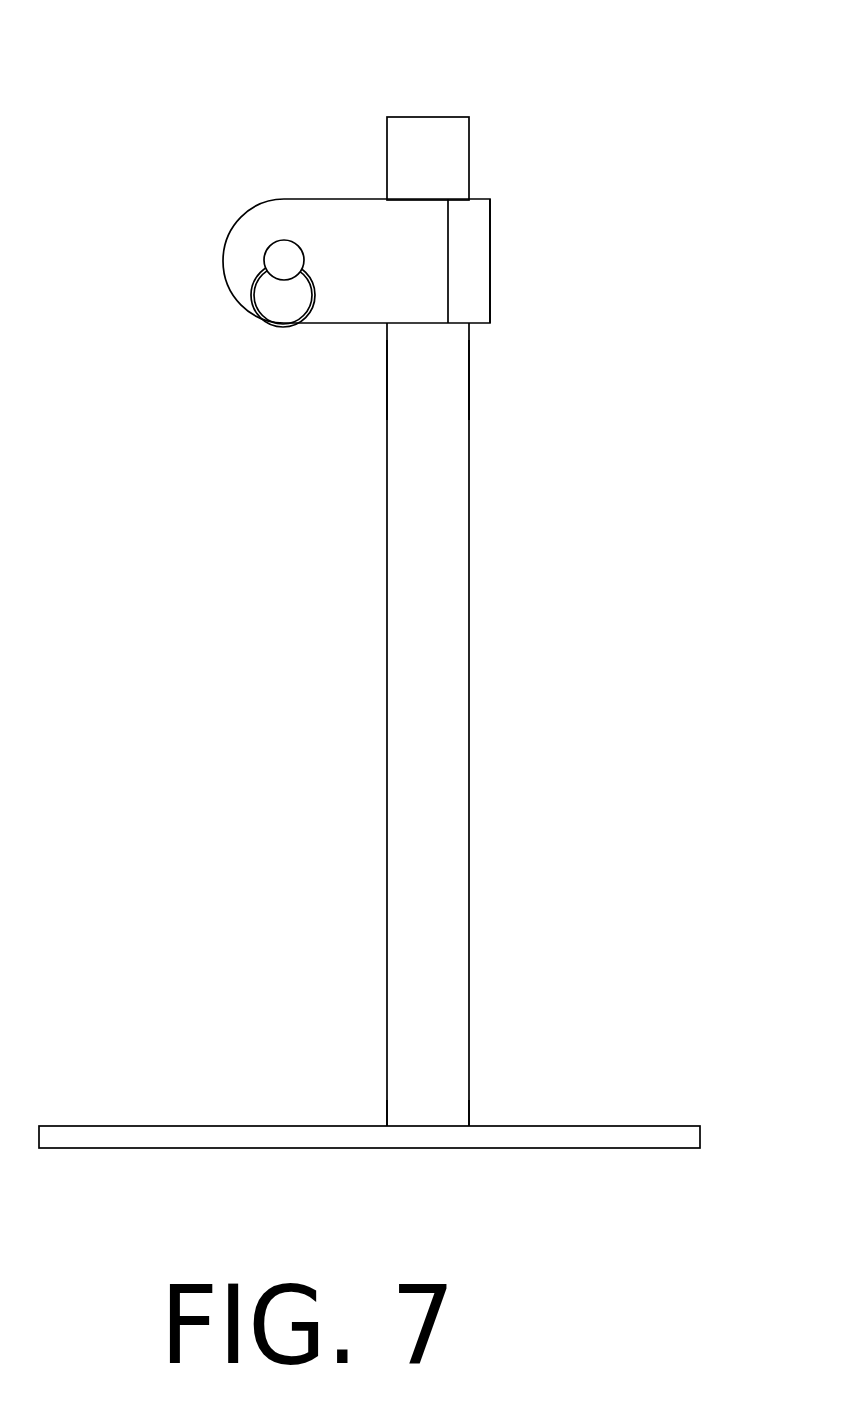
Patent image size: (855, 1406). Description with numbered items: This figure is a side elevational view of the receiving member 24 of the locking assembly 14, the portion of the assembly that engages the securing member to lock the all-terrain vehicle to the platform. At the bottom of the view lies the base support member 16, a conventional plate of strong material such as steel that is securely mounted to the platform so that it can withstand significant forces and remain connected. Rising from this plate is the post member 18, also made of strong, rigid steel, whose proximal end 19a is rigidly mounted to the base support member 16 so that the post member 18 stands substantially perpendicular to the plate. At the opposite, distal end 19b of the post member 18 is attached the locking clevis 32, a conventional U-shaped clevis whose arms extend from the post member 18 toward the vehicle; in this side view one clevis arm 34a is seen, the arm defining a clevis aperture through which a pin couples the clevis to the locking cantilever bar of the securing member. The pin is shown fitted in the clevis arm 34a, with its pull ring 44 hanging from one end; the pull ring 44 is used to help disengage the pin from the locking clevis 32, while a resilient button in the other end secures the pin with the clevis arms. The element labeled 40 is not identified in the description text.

The locking assembly 14 is at (527, 388).
The base support member 16 is at (252, 1133).
The post member 18 is at (453, 733).
The proximal end 19a is at (472, 1122).
The distal end 19b is at (473, 107).
The receiving member 24 is at (371, 224).
The locking clevis 32 is at (467, 276).
The clevis arm 34a is at (411, 278).
The pin 40 is at (277, 252).
The pull ring 44 is at (268, 323).